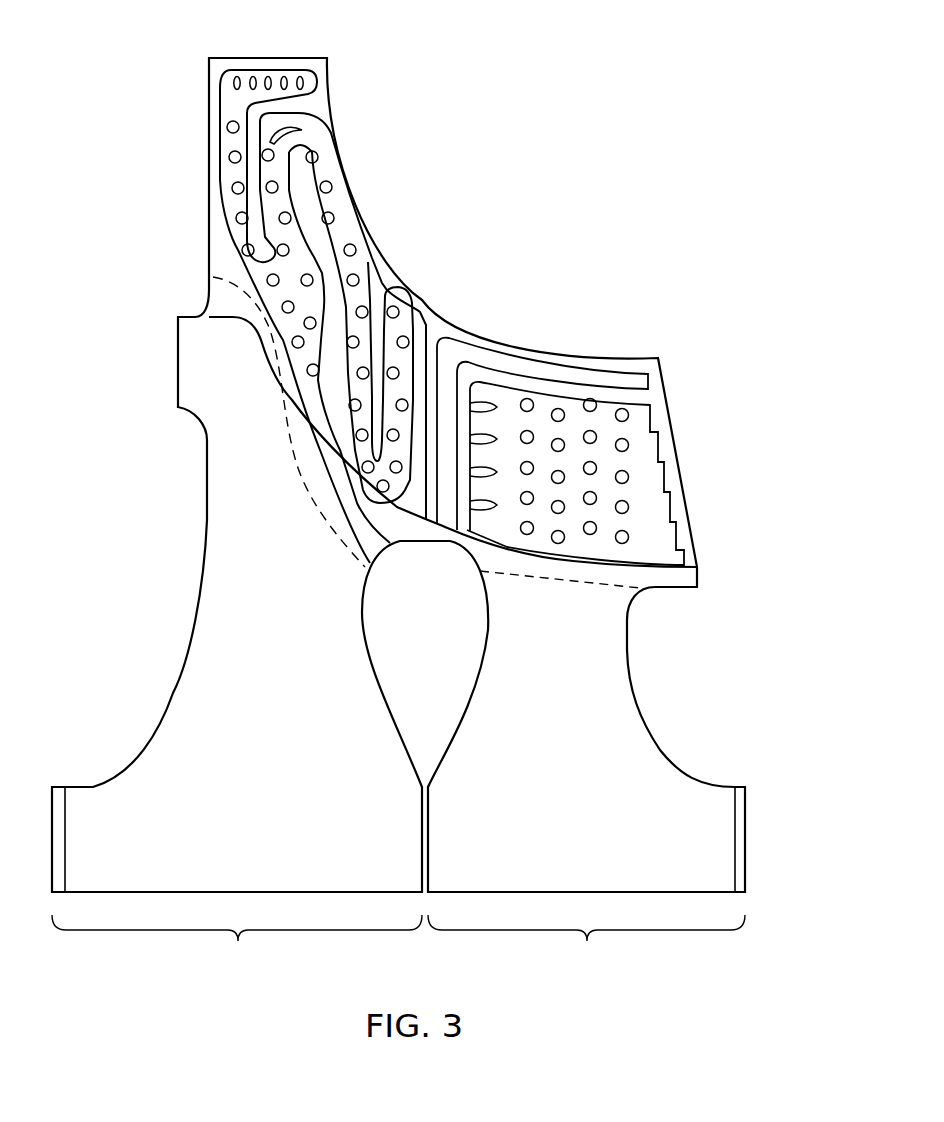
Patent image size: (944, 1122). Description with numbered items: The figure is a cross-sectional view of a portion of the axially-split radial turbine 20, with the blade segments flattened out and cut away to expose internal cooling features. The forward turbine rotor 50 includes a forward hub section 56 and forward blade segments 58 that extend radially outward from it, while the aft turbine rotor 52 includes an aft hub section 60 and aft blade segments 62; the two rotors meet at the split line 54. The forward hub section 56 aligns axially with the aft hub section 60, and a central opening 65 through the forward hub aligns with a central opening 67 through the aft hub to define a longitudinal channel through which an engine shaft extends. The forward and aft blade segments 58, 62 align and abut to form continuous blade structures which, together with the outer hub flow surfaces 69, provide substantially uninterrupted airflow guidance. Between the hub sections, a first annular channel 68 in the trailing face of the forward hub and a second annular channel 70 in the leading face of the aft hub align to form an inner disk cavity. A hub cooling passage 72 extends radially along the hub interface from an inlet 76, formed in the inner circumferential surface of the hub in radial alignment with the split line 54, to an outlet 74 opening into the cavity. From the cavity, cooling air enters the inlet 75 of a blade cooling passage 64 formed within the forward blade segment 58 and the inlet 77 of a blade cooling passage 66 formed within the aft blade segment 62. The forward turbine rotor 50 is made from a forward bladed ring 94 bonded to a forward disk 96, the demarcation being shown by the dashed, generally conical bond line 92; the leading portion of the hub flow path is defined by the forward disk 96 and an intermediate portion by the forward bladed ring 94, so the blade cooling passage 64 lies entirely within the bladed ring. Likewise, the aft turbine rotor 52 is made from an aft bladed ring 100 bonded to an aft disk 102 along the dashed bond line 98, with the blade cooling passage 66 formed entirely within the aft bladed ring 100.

The radial turbine 20 is at (585, 182).
The forward turbine rotor 50 is at (237, 944).
The aft turbine rotor 52 is at (586, 944).
The split line 54 is at (436, 322).
The forward hub section 56 is at (203, 578).
The forward blade segment 58 is at (207, 105).
The aft hub section 60 is at (642, 690).
The aft blade segment 62 is at (675, 437).
The blade cooling passage 64 is at (348, 226).
The central opening 65 is at (244, 906).
The blade cooling passage 66 is at (553, 365).
The central opening 67 is at (544, 906).
The first annular channel 68 is at (408, 621).
The outer hub flow surface 69 is at (258, 358).
The second annular channel 70 is at (468, 621).
The hub cooling passage 72 is at (420, 825).
The outlet 74 is at (432, 790).
The inlet 75 is at (357, 538).
The inlet 76 is at (432, 890).
The inlet 77 is at (443, 541).
The bond line 92 is at (298, 455).
The forward bladed ring 94 is at (392, 284).
The forward disk 96 is at (287, 699).
The bond line 98 is at (566, 582).
The aft bladed ring 100 is at (626, 356).
The aft disk 102 is at (585, 699).